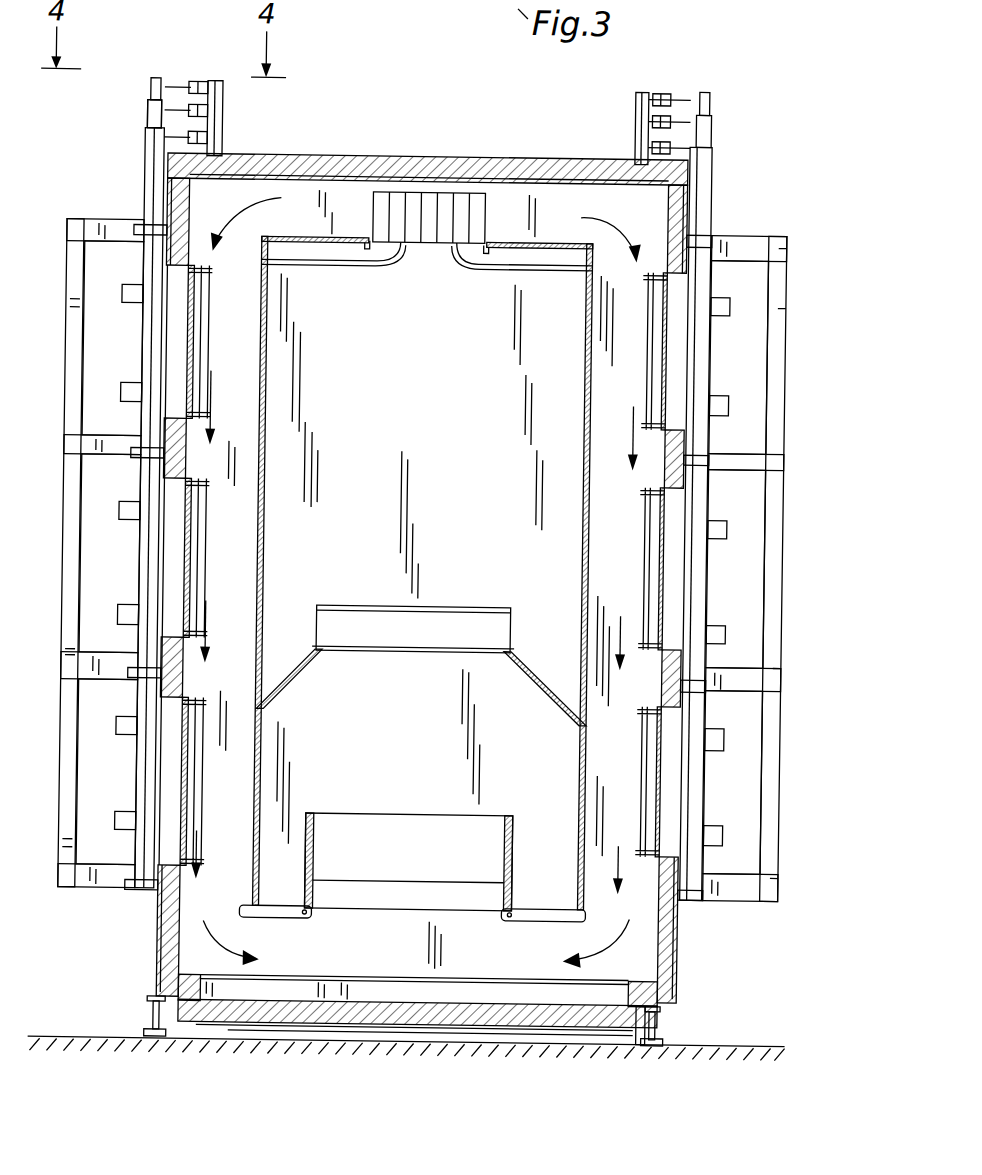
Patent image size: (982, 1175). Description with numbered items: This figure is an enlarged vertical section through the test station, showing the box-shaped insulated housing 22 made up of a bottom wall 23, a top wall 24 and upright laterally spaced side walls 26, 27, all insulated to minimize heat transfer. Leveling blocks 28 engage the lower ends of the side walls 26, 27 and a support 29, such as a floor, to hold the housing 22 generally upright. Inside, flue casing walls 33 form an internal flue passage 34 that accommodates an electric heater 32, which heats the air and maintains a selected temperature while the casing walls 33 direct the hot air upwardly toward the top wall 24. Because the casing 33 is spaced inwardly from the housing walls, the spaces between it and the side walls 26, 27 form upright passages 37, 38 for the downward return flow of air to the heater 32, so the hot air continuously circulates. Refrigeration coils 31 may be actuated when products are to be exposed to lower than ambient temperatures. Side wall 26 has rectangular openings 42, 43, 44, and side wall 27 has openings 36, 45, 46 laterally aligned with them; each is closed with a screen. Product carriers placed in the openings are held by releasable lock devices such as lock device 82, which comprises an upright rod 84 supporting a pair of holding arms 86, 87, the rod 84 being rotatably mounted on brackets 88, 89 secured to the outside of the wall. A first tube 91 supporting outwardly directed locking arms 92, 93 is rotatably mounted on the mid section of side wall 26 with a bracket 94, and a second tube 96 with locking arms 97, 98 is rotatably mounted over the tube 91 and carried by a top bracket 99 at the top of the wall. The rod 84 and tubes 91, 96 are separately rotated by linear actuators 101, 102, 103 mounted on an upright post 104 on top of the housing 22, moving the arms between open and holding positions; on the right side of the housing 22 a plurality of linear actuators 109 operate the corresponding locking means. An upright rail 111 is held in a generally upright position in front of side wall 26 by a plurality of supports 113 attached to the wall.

The housing 22 is at (414, 568).
The bottom wall 23 is at (364, 1000).
The top wall 24 is at (472, 162).
The side wall 26 is at (158, 950).
The side wall 27 is at (692, 941).
The leveling blocks 28 is at (160, 1022).
The support 29 is at (100, 1038).
The refrigeration coils 31 is at (370, 812).
The electric heater 32 is at (480, 602).
The flue casing walls 33 is at (586, 762).
The flue passage 34 is at (430, 739).
The opening 36 is at (690, 357).
The upright passage 37 is at (250, 224).
The upright passage 38 is at (600, 232).
The opening 42 is at (197, 357).
The opening 43 is at (194, 560).
The opening 44 is at (194, 776).
The opening 45 is at (690, 566).
The opening 46 is at (680, 776).
The lock device 82 is at (140, 768).
The upright rod 84 is at (150, 80).
The holding arm 86 is at (124, 728).
The holding arm 87 is at (124, 828).
The bracket 88 is at (140, 890).
The bracket 89 is at (136, 676).
The first tube 91 is at (148, 110).
The locking arm 92 is at (124, 510).
The locking arm 93 is at (124, 620).
The bracket 94 is at (136, 457).
The second tube 96 is at (145, 332).
The locking arm 97 is at (124, 294).
The locking arm 98 is at (124, 398).
The top bracket 99 is at (142, 226).
The linear actuator 101 is at (172, 84).
The linear actuator 102 is at (222, 110).
The linear actuator 103 is at (222, 137).
The upright post 104 is at (220, 80).
The linear actuators 109 is at (684, 88).
The upright rail 111 is at (70, 554).
The supports 113 is at (88, 236).